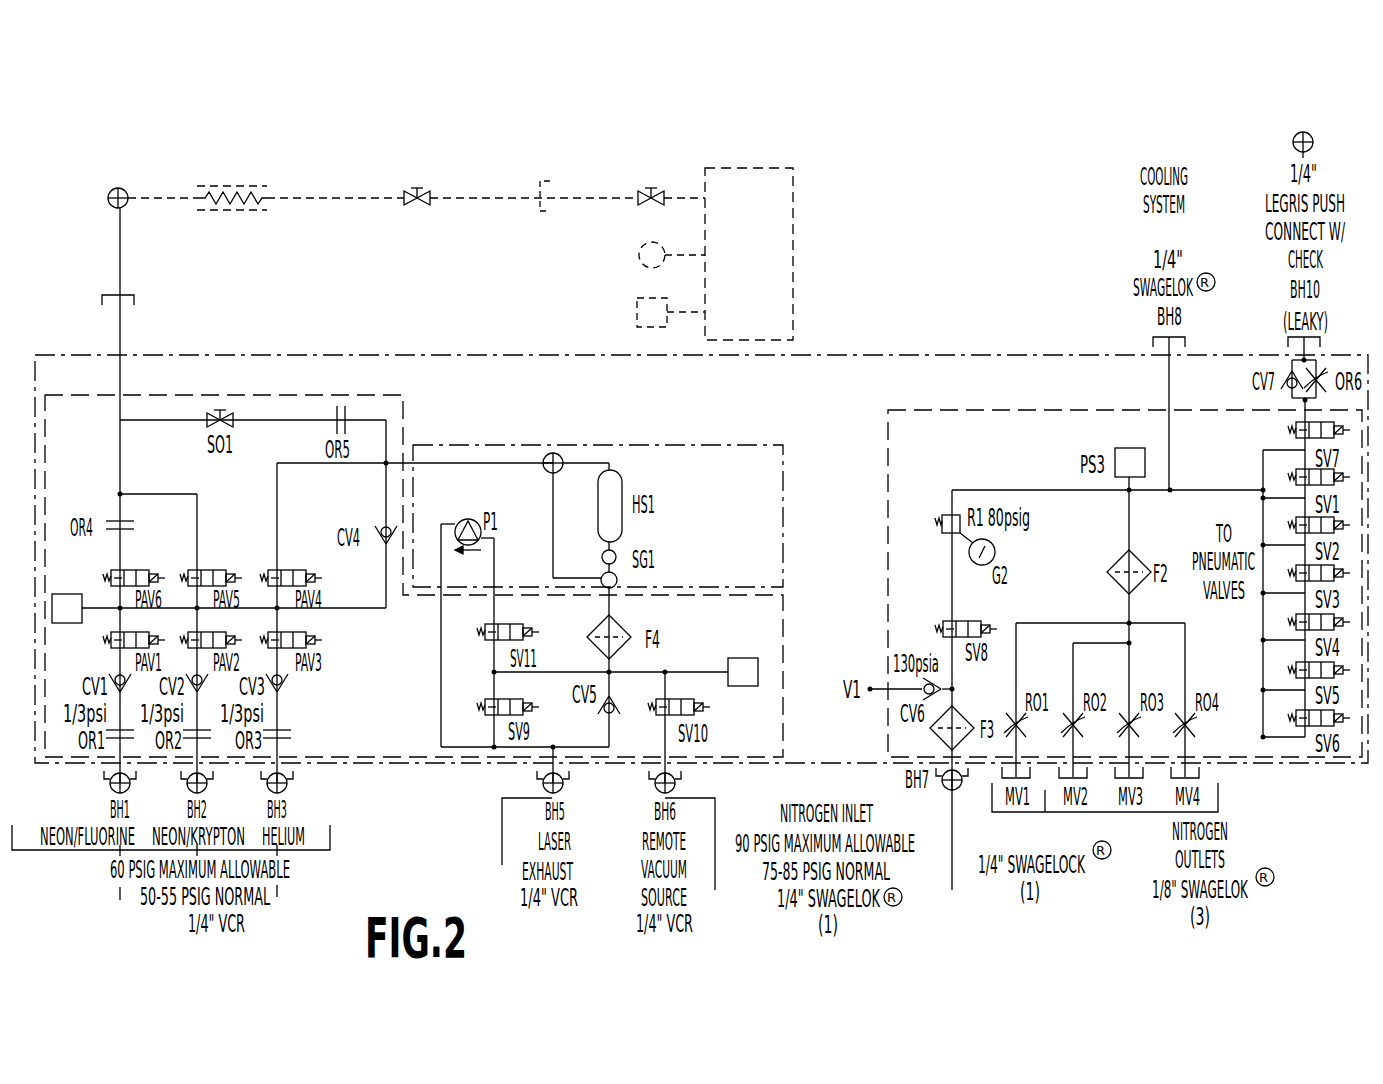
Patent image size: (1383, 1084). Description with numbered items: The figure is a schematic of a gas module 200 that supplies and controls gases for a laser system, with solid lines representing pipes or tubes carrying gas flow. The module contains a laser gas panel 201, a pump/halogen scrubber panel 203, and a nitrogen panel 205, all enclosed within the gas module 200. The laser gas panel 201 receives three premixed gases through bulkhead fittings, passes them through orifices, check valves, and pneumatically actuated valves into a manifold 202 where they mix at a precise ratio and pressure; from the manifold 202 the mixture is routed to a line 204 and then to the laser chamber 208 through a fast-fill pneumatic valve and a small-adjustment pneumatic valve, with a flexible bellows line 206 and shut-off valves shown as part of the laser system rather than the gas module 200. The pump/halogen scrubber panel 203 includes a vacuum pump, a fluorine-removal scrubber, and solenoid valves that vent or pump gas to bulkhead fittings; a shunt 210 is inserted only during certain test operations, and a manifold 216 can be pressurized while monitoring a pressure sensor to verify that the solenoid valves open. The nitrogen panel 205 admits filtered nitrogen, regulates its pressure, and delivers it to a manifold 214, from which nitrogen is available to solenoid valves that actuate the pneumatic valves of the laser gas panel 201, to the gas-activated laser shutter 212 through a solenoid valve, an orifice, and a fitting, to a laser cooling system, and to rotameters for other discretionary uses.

The gas module 200 is at (893, 355).
The laser gas panel 201 is at (408, 397).
The manifold 202 is at (355, 610).
The pump/halogen scrubber panel 203 is at (775, 445).
The line 204 is at (117, 248).
The nitrogen panel 205 is at (1047, 408).
The reinforced metal bellows flexible line 206 is at (308, 198).
The laser chamber 208 is at (793, 198).
The shunt 210 is at (548, 498).
The laser shutter 212 is at (1263, 112).
The manifold 214 is at (1208, 488).
The manifold 216 is at (660, 668).